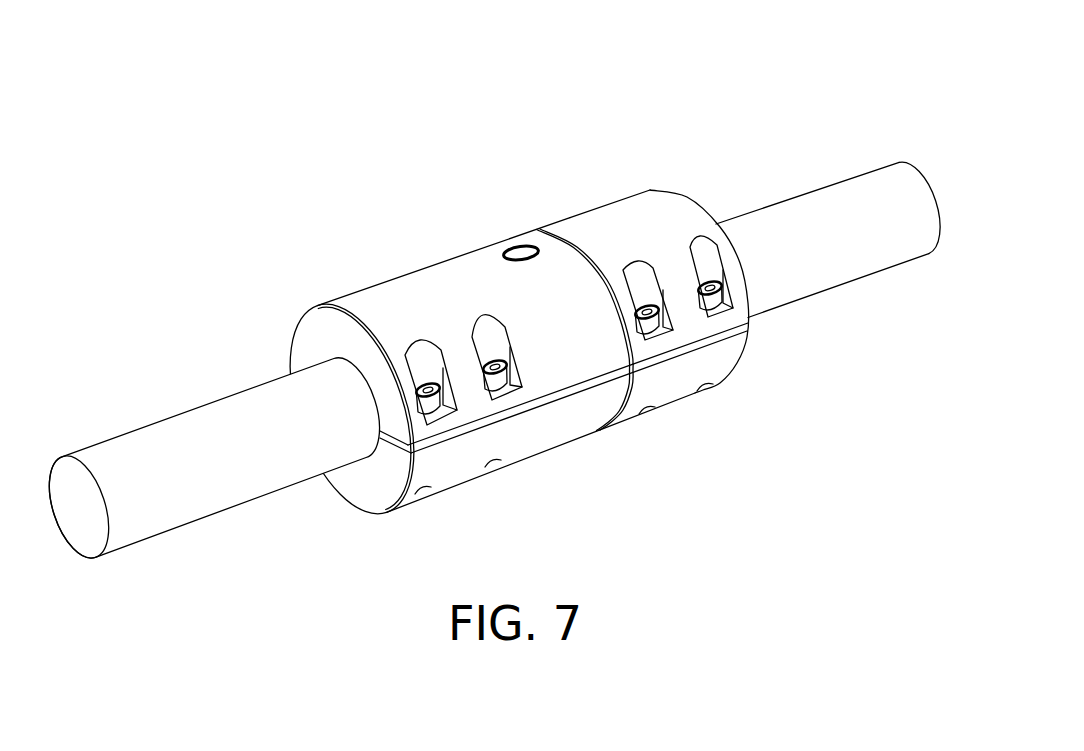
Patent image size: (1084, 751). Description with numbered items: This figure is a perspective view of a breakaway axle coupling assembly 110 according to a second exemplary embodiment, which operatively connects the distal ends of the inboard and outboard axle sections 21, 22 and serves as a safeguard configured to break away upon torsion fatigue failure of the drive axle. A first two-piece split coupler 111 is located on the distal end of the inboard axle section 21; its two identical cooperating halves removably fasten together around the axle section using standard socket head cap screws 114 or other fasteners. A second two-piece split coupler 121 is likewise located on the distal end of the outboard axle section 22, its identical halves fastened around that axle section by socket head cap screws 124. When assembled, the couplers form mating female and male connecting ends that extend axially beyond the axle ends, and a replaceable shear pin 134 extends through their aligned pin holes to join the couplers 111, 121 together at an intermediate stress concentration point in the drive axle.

The inboard axle section 21 is at (195, 427).
The outboard axle section 22 is at (837, 203).
The breakaway axle coupling assembly 110 is at (507, 268).
The first two-piece split coupler 111 is at (449, 346).
The socket head cap screws 114 is at (426, 378).
The second two-piece split coupler 121 is at (643, 246).
The socket head cap screws 124 is at (645, 305).
The replaceable shear pin 134 is at (513, 243).